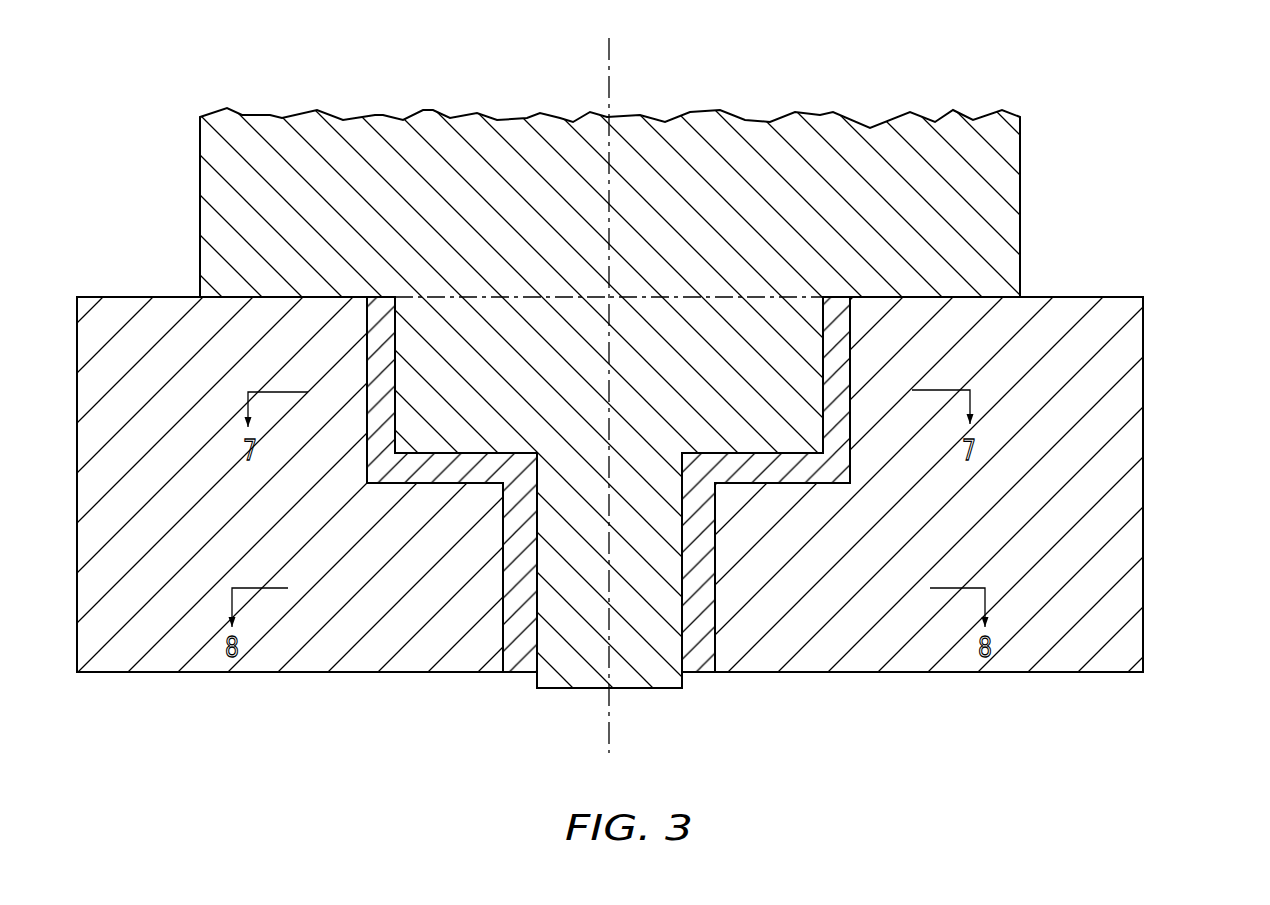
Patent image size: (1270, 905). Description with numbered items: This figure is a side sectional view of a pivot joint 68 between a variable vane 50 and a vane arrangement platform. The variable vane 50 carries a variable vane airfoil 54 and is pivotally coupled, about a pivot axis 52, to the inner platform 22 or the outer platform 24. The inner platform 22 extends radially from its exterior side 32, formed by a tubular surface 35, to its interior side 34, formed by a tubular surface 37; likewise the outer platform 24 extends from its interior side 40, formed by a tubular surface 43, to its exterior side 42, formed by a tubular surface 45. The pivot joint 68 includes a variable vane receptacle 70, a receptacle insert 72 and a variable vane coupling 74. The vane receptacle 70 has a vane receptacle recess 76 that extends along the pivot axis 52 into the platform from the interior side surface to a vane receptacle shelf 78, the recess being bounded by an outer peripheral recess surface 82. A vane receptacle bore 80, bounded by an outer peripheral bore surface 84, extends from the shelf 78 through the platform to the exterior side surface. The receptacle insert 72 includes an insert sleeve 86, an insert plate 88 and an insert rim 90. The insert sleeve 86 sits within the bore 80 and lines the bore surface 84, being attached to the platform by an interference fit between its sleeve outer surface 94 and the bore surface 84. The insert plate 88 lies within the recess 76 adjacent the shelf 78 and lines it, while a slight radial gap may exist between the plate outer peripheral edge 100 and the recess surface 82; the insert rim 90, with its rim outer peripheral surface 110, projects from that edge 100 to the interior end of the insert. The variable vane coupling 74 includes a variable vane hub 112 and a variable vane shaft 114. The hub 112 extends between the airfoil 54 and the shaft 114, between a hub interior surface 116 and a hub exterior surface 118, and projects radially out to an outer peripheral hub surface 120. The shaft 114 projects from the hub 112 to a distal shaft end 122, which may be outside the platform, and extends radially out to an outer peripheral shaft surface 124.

The inner platform 22 is at (1202, 461).
The outer platform 24 is at (1150, 307).
The inner platform exterior side 32 is at (929, 728).
The inner platform interior side 34 is at (996, 247).
The tubular surface 35 is at (1132, 713).
The tubular surface 37 is at (1146, 254).
The outer platform interior side 40 is at (1085, 292).
The outer platform exterior side 42 is at (1078, 674).
The tubular surface 43 is at (1124, 297).
The tubular surface 45 is at (1115, 673).
The variable vane 50 is at (1030, 132).
The pivot axis 52 is at (614, 58).
The variable vane airfoil 54 is at (1026, 165).
The pivot joint 68 is at (448, 716).
The variable vane receptacle 70 is at (380, 318).
The receptacle insert 72 is at (428, 489).
The variable vane coupling 74 is at (685, 597).
The vane receptacle recess 76 is at (855, 343).
The vane receptacle shelf 78 is at (785, 456).
The vane receptacle bore 80 is at (719, 567).
The outer peripheral recess surface 82 is at (370, 440).
The outer peripheral bore surface 84 is at (709, 650).
The insert sleeve 86 is at (501, 636).
The insert plate 88 is at (492, 447).
The insert rim 90 is at (366, 342).
The sleeve outer surface 94 is at (717, 633).
The plate outer peripheral edge 100 is at (368, 487).
The rim outer peripheral surface 110 is at (363, 417).
The variable vane hub 112 is at (825, 403).
The variable vane shaft 114 is at (535, 570).
The hub interior surface 116 is at (787, 470).
The hub exterior surface 118 is at (750, 296).
The outer peripheral hub surface 120 is at (395, 356).
The distal shaft end 122 is at (580, 689).
The outer peripheral shaft surface 124 is at (683, 684).